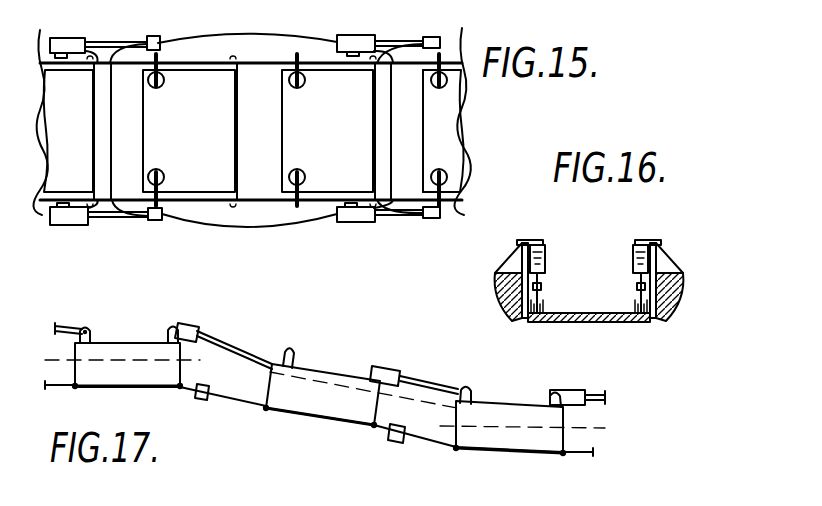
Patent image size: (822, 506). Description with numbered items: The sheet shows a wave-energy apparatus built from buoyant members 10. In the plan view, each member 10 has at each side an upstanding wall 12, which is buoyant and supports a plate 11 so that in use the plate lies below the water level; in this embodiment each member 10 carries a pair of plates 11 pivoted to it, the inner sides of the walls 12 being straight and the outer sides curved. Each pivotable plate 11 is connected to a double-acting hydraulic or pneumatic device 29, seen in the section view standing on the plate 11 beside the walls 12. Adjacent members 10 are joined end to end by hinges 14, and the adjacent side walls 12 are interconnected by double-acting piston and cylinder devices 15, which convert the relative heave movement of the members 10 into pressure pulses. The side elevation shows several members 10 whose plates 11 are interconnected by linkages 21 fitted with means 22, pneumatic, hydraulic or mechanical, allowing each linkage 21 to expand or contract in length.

In FIG. 15, the buoyant member 10 is at (228, 31).
In FIG. 16, the buoyant member 10 is at (580, 252).
In FIG. 17, the buoyant member 10 is at (105, 330).
In FIG. 15, the plate 11 is at (80, 160).
In FIG. 16, the plate 11 is at (578, 312).
In FIG. 17, the plate 11 is at (122, 388).
In FIG. 15, the upstanding wall 12 is at (268, 56).
In FIG. 16, the upstanding wall 12 is at (508, 293).
In FIG. 17, the upstanding wall 12 is at (126, 348).
In FIG. 15, the hinge 14 is at (113, 205).
In FIG. 15, the piston and cylinder device 15 is at (75, 54).
In FIG. 17, the piston and cylinder device 15 is at (189, 327).
In FIG. 17, the linkage 21 is at (233, 400).
In FIG. 17, the means 22 is at (197, 396).
In FIG. 15, the double-acting hydraulic or pneumatic device 29 is at (163, 87).
In FIG. 16, the double-acting hydraulic or pneumatic device 29 is at (557, 234).